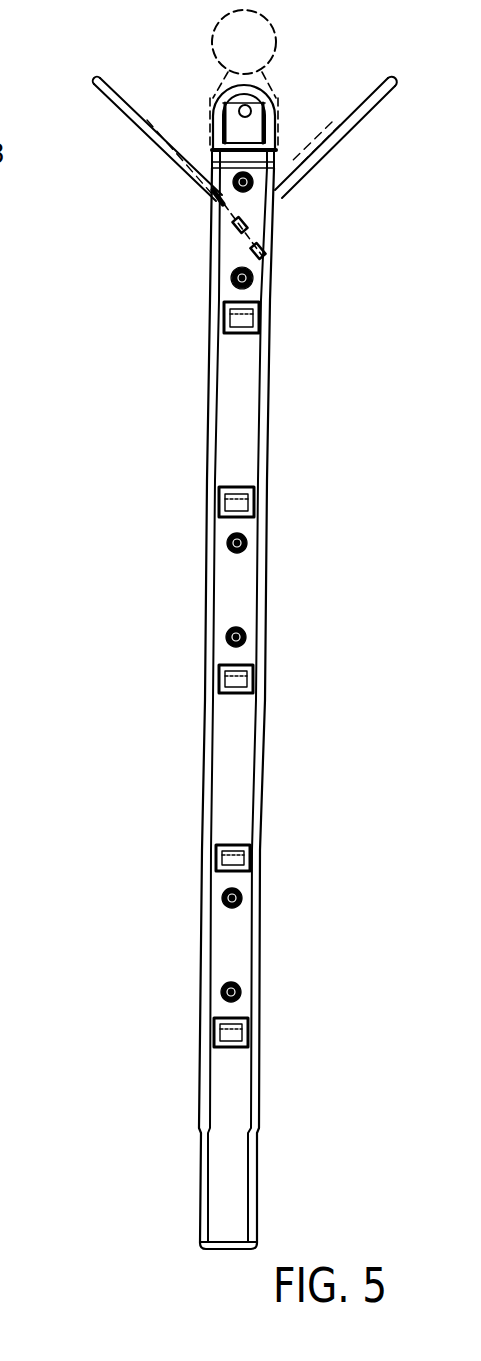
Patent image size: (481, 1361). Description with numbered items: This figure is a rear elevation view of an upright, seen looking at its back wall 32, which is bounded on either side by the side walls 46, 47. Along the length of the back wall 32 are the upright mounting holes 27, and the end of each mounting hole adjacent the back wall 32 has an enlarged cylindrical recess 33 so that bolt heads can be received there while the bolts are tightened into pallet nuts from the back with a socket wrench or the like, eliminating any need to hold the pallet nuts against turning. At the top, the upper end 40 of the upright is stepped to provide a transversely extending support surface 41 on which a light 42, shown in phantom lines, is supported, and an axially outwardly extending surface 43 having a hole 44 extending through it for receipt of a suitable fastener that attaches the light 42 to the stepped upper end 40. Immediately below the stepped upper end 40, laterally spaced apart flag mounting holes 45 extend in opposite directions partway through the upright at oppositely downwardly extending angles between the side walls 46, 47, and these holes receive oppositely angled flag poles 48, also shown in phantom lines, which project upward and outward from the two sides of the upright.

The light 42 is at (215, 53).
The flag poles 48 is at (125, 124).
The axially outwardly extending surface 43 is at (230, 127).
The hole 44 is at (248, 106).
The transversely extending support surface 41 is at (277, 147).
The upper end 40 is at (276, 165).
The flag mounting holes 45 is at (220, 217).
The upright mounting holes 27 is at (236, 281).
The enlarged cylindrical recess 33 is at (254, 283).
The side wall 47 is at (210, 403).
The side wall 46 is at (273, 399).
The back wall 32 is at (233, 597).